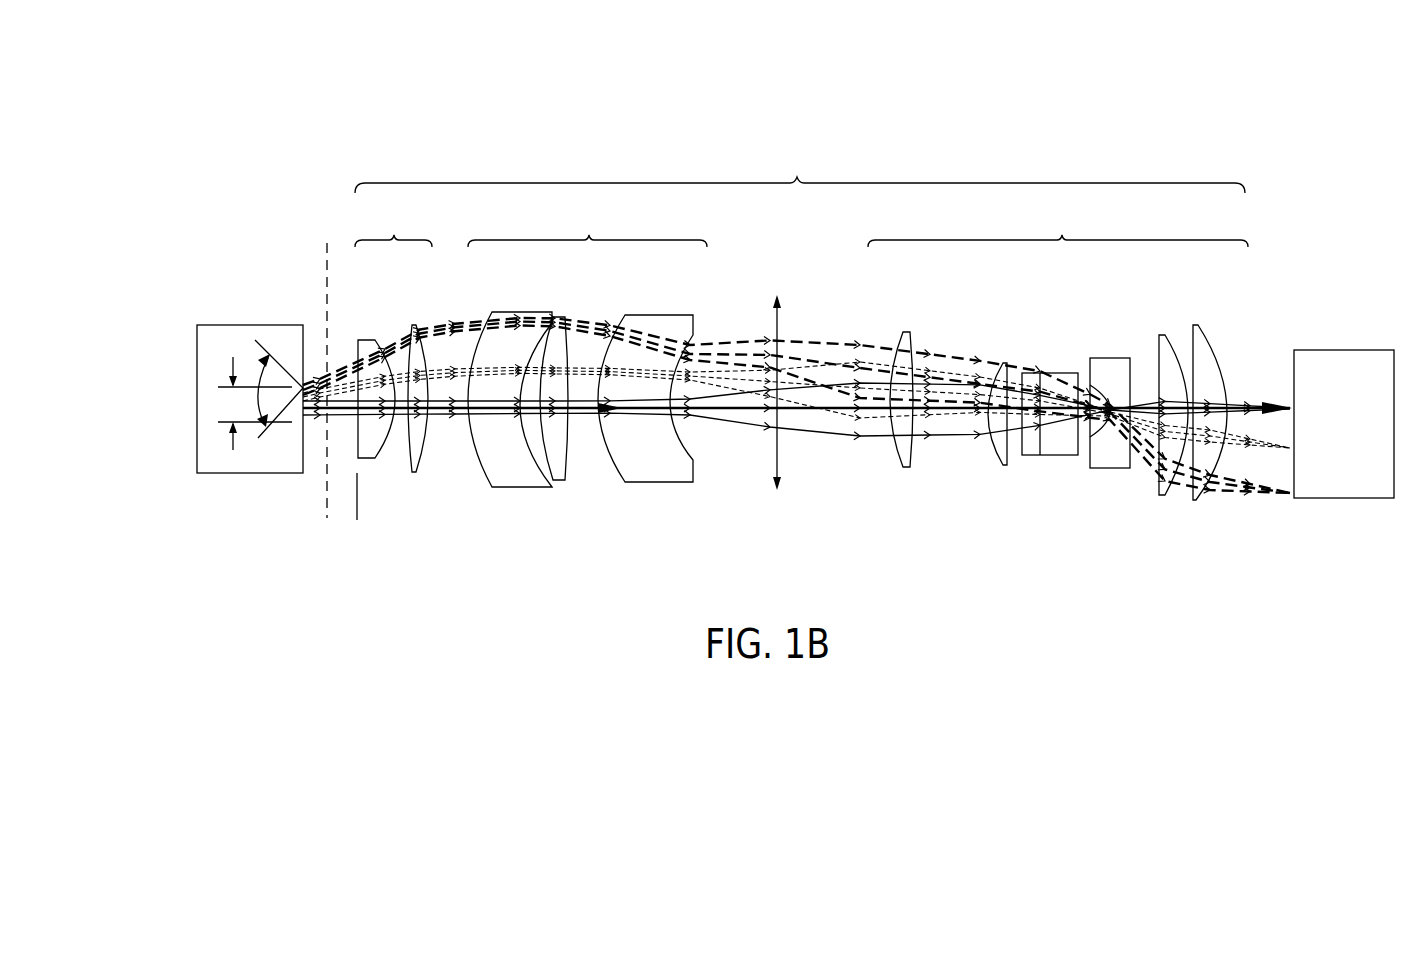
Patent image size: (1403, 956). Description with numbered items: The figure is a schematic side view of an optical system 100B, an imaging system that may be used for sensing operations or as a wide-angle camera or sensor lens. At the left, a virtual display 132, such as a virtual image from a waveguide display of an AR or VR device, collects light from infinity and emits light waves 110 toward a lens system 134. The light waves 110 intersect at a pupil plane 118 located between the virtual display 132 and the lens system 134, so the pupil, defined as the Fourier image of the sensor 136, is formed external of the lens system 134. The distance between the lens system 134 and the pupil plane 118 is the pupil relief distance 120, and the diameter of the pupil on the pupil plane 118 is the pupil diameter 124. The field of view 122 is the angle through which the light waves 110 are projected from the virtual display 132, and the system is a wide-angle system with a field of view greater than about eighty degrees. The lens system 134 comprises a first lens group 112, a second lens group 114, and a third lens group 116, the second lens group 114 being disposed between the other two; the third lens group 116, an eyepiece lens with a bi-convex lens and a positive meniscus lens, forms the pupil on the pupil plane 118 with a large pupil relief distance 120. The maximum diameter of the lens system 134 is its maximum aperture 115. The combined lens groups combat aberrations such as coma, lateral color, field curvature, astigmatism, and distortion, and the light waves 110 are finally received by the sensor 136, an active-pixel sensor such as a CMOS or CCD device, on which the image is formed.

The optical system 100B is at (1274, 128).
The light waves 110 is at (373, 318).
The first lens group 112 is at (1058, 225).
The second lens group 114 is at (587, 225).
The maximum aperture 115 is at (777, 453).
The third lens group 116 is at (393, 225).
The pupil plane 118 is at (327, 272).
The pupil relief distance 120 is at (340, 510).
The field of view 122 is at (264, 424).
The pupil diameter 124 is at (233, 450).
The virtual display 132 is at (207, 345).
The lens system 134 is at (800, 168).
The sensor 136 is at (1367, 437).